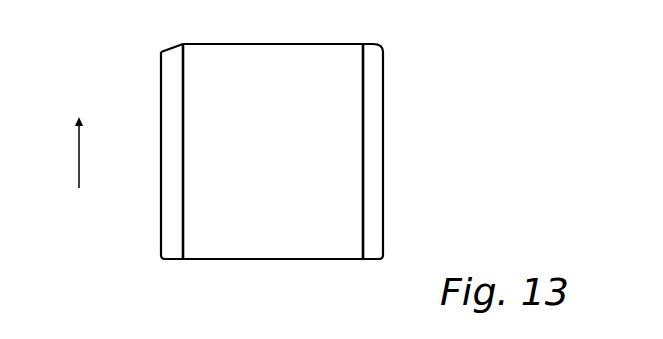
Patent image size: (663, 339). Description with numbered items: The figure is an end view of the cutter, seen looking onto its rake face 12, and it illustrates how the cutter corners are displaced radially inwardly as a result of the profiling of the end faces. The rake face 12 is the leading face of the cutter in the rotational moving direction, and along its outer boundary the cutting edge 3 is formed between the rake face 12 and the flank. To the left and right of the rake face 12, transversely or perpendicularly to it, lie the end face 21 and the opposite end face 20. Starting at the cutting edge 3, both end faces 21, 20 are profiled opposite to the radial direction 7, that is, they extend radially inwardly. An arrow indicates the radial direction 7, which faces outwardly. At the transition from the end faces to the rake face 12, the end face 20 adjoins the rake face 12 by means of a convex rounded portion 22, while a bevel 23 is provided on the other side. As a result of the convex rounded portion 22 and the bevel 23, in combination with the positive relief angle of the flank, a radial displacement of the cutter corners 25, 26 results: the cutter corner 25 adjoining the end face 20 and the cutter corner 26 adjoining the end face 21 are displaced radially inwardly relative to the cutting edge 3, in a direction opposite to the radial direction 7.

The rake face 12 is at (278, 168).
The cutting edge 3 is at (258, 44).
The cutter corner 25 is at (160, 52).
The cutter corner 26 is at (385, 50).
The end face 21 is at (156, 201).
The end face 20 is at (390, 197).
The bevel 23 is at (172, 117).
The convex rounded portion 22 is at (372, 132).
The radial direction 7 is at (79, 145).